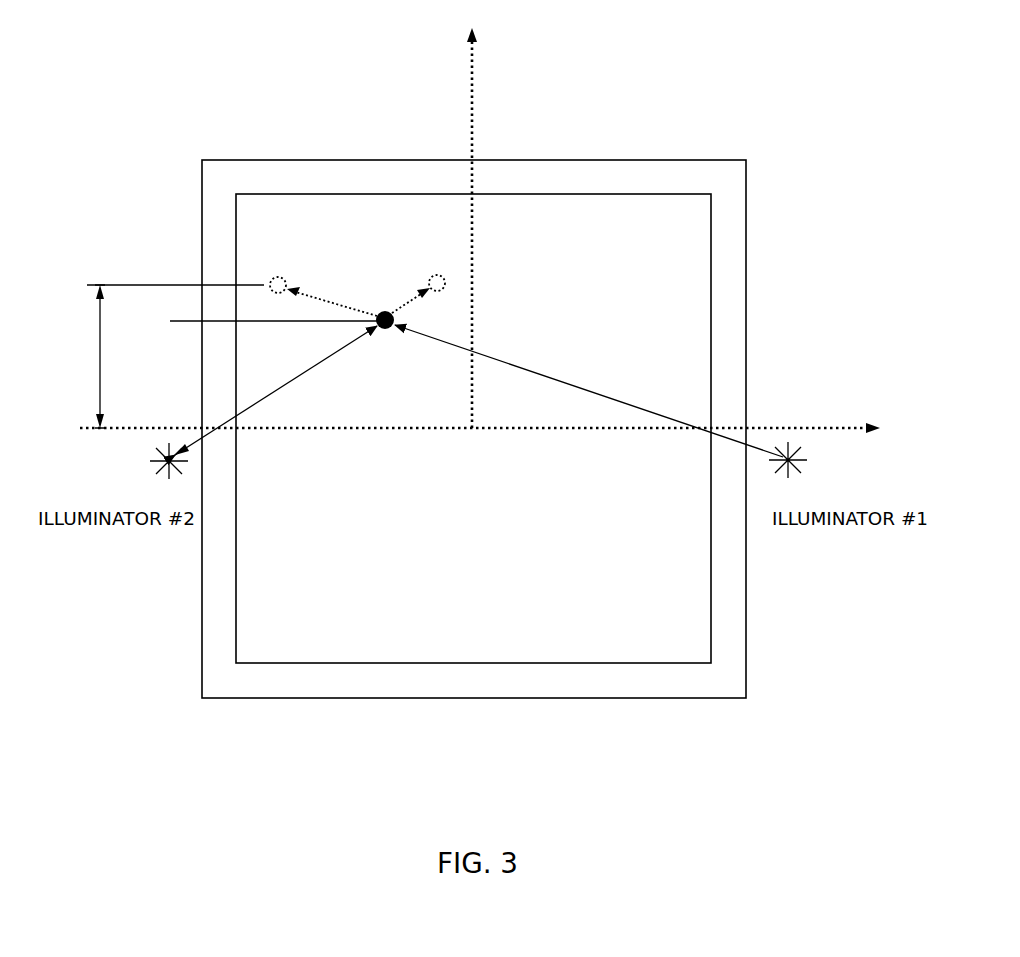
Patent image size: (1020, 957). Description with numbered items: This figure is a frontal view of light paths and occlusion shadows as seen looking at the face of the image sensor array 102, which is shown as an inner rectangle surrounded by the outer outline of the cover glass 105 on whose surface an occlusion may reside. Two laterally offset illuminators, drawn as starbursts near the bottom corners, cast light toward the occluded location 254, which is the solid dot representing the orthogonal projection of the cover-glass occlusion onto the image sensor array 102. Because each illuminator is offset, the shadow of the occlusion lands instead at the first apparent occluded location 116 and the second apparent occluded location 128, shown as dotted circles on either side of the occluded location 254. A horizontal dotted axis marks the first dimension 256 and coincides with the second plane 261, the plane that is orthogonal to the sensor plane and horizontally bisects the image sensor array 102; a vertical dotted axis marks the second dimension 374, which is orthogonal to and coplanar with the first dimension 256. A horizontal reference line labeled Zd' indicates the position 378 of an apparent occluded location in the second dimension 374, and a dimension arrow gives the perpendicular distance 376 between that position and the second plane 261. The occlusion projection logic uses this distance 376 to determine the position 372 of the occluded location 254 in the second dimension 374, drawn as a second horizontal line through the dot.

The cover glass 105 is at (746, 219).
The image sensor array 102 is at (711, 268).
The second dimension 374 is at (503, 58).
The first dimension 256 is at (878, 462).
The second plane 261 is at (283, 430).
The position Zd' of apparent occluded location 378 is at (133, 285).
The position of the occluded location in the second dimension 372 is at (170, 321).
The perpendicular distance 376 is at (100, 370).
The occluded location 254 is at (384, 310).
The first apparent occluded location 116 is at (283, 279).
The second apparent occluded location 128 is at (446, 283).